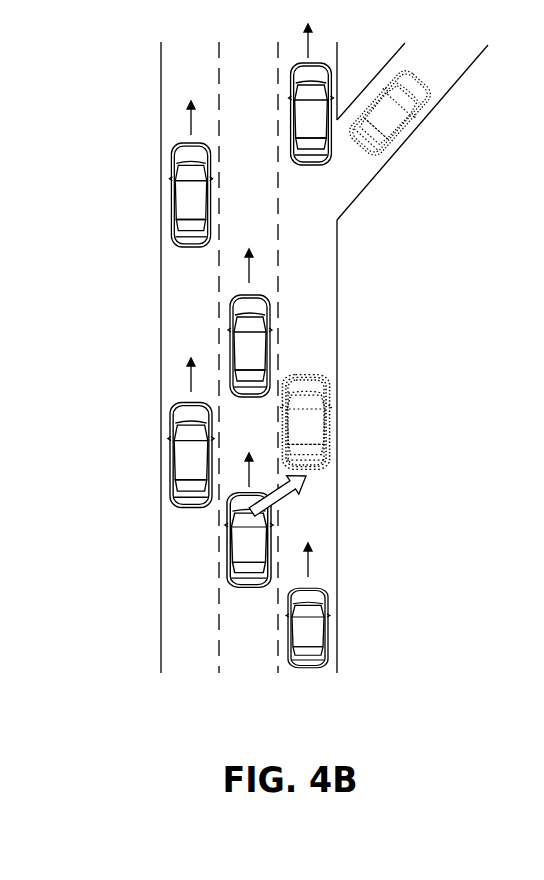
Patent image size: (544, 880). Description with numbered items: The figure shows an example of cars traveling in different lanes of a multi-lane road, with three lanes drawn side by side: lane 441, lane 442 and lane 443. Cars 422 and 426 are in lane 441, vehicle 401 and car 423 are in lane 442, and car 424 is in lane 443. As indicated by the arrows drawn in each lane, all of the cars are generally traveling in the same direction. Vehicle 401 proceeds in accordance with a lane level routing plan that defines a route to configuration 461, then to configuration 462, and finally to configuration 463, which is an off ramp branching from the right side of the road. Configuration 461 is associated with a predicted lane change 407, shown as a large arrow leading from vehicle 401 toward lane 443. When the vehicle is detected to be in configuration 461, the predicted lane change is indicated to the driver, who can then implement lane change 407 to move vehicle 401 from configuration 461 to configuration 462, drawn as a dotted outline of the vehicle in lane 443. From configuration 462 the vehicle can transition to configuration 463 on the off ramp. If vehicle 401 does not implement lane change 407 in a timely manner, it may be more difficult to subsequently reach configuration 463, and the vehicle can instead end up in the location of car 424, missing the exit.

The vehicle 401 is at (264, 360).
The lane change 407 is at (278, 510).
The car 422 is at (185, 460).
The car 423 is at (247, 348).
The car 424 is at (303, 127).
The car 426 is at (188, 205).
The lane 441 is at (217, 672).
The lane 442 is at (277, 672).
The lane 443 is at (283, 672).
The configuration 461 is at (230, 588).
The configuration 462 is at (318, 452).
The configuration 463 is at (362, 158).